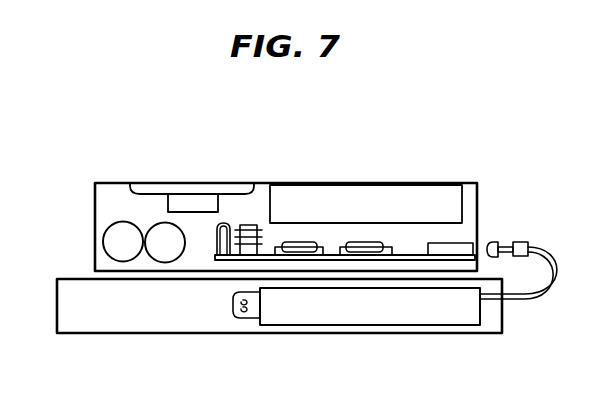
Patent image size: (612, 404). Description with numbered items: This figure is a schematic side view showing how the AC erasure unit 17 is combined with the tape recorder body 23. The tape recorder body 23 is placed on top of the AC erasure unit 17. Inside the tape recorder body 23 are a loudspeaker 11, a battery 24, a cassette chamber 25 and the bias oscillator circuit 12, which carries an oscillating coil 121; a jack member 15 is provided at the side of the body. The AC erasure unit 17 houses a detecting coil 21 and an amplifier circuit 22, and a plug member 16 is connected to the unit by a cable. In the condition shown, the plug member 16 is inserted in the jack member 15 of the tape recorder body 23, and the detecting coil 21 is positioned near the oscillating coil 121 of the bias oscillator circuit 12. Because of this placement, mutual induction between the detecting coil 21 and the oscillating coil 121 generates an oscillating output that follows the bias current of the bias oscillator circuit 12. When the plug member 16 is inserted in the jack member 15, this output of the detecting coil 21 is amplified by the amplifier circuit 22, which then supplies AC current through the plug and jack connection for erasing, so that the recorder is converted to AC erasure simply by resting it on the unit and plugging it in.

The loudspeaker 11 is at (198, 190).
The bias oscillator circuit 12 is at (332, 252).
The oscillating coil 121 is at (250, 226).
The jack member 15 is at (465, 250).
The plug member 16 is at (523, 248).
The AC erasure unit 17 is at (130, 325).
The detecting coil 21 is at (248, 320).
The amplifier circuit 22 is at (353, 313).
The tape recorder body 23 is at (112, 202).
The battery 24 is at (112, 242).
The cassette chamber 25 is at (400, 193).